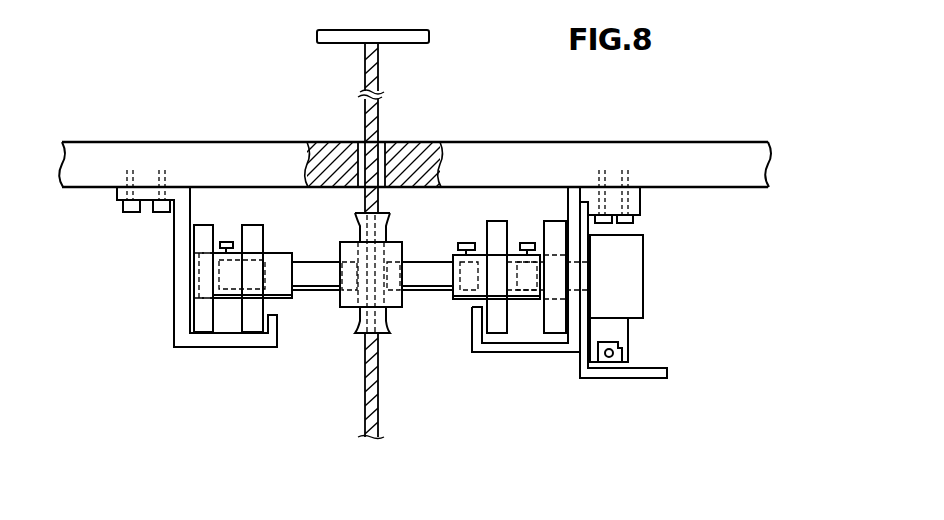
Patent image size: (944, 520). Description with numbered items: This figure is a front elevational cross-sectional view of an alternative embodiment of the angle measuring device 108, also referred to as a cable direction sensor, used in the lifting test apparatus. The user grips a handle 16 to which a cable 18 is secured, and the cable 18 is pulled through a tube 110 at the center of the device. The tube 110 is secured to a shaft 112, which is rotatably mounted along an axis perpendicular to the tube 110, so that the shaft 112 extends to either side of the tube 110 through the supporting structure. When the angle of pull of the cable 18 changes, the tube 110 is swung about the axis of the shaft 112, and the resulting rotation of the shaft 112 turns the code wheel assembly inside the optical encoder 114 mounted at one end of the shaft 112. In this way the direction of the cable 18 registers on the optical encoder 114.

The handle 16 is at (372, 31).
The cable 18 is at (378, 116).
The angle measuring device 108 is at (590, 407).
The tube 110 is at (352, 330).
The shaft 112 is at (322, 278).
The optical encoder 114 is at (643, 306).